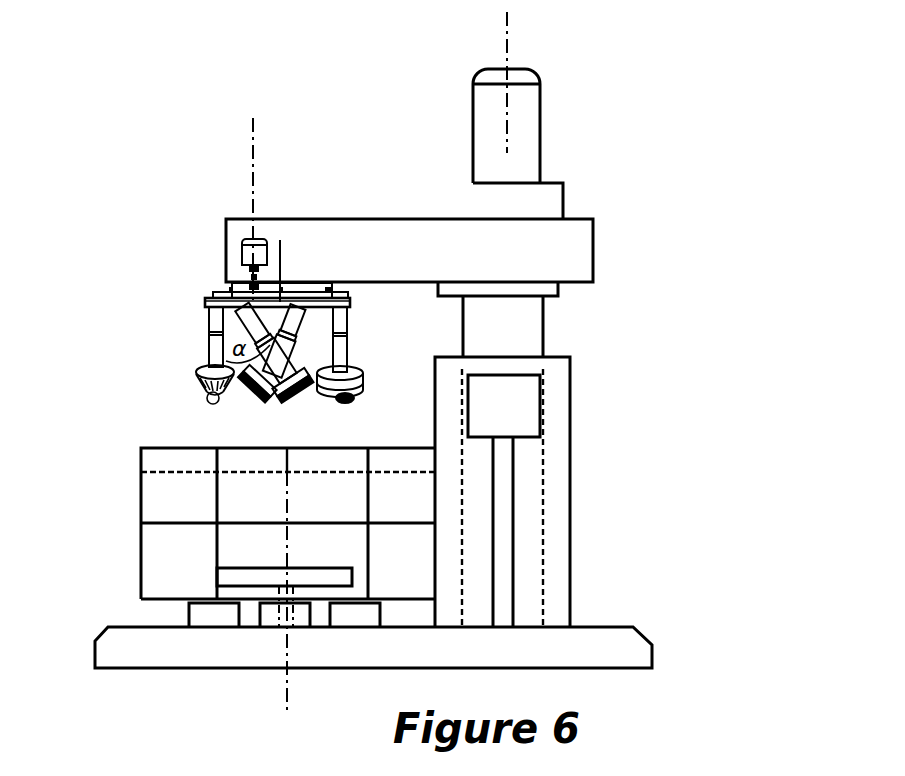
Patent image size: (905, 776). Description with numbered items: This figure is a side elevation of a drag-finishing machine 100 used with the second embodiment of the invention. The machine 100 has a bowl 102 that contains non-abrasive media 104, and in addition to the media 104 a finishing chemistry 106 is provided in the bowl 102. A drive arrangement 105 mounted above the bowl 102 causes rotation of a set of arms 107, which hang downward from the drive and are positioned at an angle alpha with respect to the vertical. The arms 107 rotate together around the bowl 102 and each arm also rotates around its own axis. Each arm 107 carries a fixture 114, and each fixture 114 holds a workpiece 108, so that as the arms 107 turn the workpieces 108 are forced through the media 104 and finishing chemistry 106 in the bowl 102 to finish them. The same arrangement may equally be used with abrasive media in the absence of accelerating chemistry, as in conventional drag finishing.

The drag-finishing machine 100 is at (676, 297).
The bowl 102 is at (152, 462).
The non-abrasive media 104 is at (197, 508).
The drive arrangement 105 is at (241, 249).
The finishing chemistry 106 is at (190, 472).
The arms 107 is at (208, 328).
The workpieces 108 is at (185, 390).
The fixture 114 is at (207, 372).